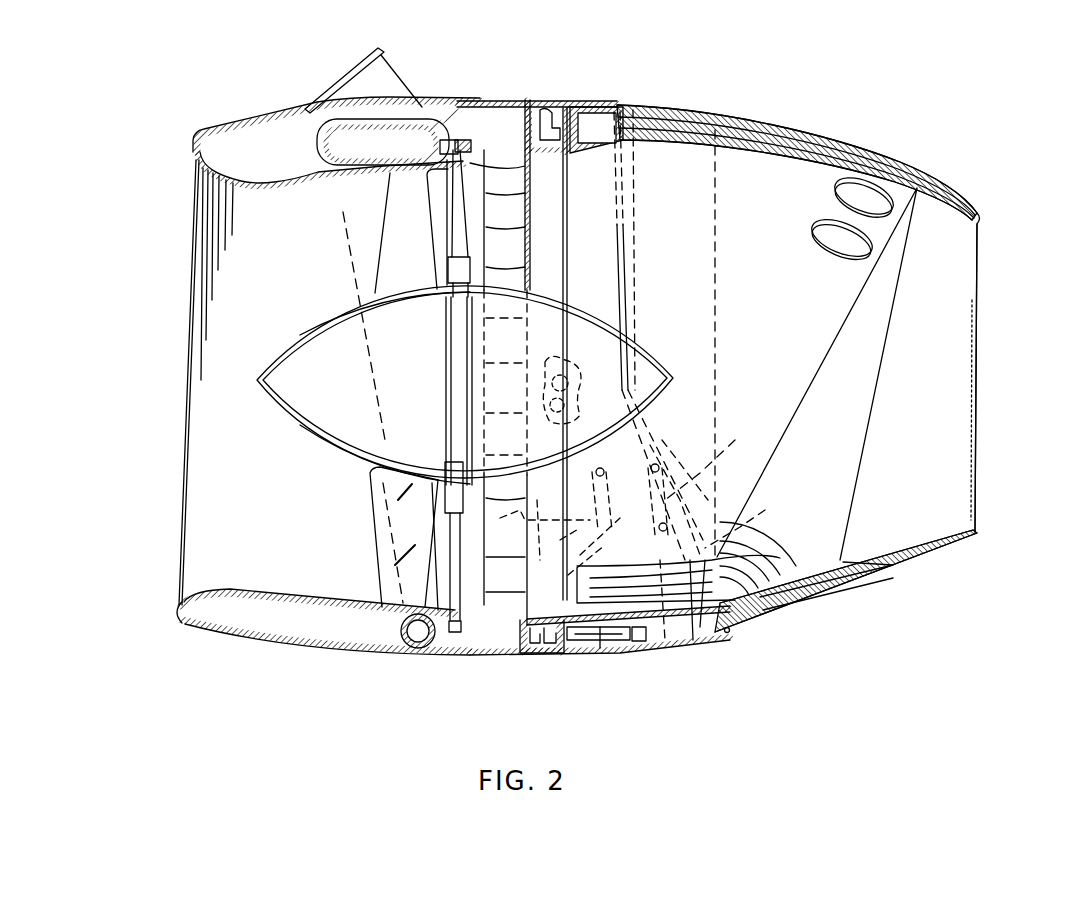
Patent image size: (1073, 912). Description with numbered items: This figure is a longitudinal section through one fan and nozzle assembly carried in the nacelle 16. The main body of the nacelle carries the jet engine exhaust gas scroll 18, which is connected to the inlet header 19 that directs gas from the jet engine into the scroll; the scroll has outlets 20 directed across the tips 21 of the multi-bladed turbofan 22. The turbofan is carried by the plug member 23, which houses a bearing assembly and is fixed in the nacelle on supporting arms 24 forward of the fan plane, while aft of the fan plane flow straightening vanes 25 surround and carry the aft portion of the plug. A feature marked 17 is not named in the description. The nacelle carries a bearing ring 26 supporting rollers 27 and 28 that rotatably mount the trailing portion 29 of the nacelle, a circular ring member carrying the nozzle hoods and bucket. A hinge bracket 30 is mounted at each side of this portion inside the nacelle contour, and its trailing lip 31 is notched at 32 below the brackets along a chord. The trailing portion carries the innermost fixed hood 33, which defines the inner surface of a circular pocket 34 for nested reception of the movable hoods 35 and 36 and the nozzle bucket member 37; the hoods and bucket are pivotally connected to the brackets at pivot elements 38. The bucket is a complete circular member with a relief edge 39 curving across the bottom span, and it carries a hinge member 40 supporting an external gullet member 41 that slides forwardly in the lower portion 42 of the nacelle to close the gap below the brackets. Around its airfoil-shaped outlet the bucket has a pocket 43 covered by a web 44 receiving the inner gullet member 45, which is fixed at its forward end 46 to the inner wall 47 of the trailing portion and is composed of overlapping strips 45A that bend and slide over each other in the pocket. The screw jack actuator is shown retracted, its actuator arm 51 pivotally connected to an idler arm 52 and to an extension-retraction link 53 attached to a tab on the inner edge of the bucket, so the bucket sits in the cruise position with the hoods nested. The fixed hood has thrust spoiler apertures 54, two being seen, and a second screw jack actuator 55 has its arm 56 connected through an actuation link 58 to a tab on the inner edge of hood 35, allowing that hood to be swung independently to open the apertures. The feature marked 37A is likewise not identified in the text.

The nacelle 16 is at (343, 653).
The housing 17 is at (190, 493).
The jet engine exhaust gas scroll 18 is at (343, 212).
The inlet header 19 is at (387, 85).
The outlets 20 is at (423, 143).
The tips 21 is at (440, 640).
The multi-bladed turbofan 22 is at (380, 504).
The plug member 23 is at (300, 425).
The supporting arms 24 is at (383, 258).
The flow straightening vanes 25 is at (505, 267).
The bearing ring 26 is at (525, 130).
The rollers 27 is at (540, 100).
The rollers 28 is at (563, 420).
The trailing portion of the nacelle 29 is at (667, 102).
The hinge bracket 30 is at (713, 470).
The trailing lip 31 is at (715, 298).
The notch 32 is at (663, 637).
The innermost fixed hood 33 is at (772, 143).
The circular pocket 34 is at (717, 120).
The movable hood 35 is at (785, 133).
The movable hood 36 is at (833, 143).
The nozzle bucket member 37 is at (893, 157).
The end face 37A is at (943, 335).
The pivot elements 38 is at (747, 517).
The relief edge 39 is at (700, 627).
The hinge member 40 is at (727, 630).
The external gullet member 41 is at (693, 647).
The lower portion of the nacelle 42 is at (577, 657).
The pocket 43 is at (813, 590).
The web 44 is at (823, 567).
The inner gullet member 45 is at (577, 603).
The strips 45A is at (740, 553).
The forward end 46 is at (643, 641).
The inner wall 47 is at (603, 643).
The actuator arm 51 is at (554, 530).
The idler arm 52 is at (594, 546).
The extension-retraction link 53 is at (652, 499).
The thrust spoiler apertures 54 is at (810, 237).
The screw jack actuator 55 is at (545, 498).
The arm 56 is at (589, 499).
The actuation link 58 is at (664, 462).